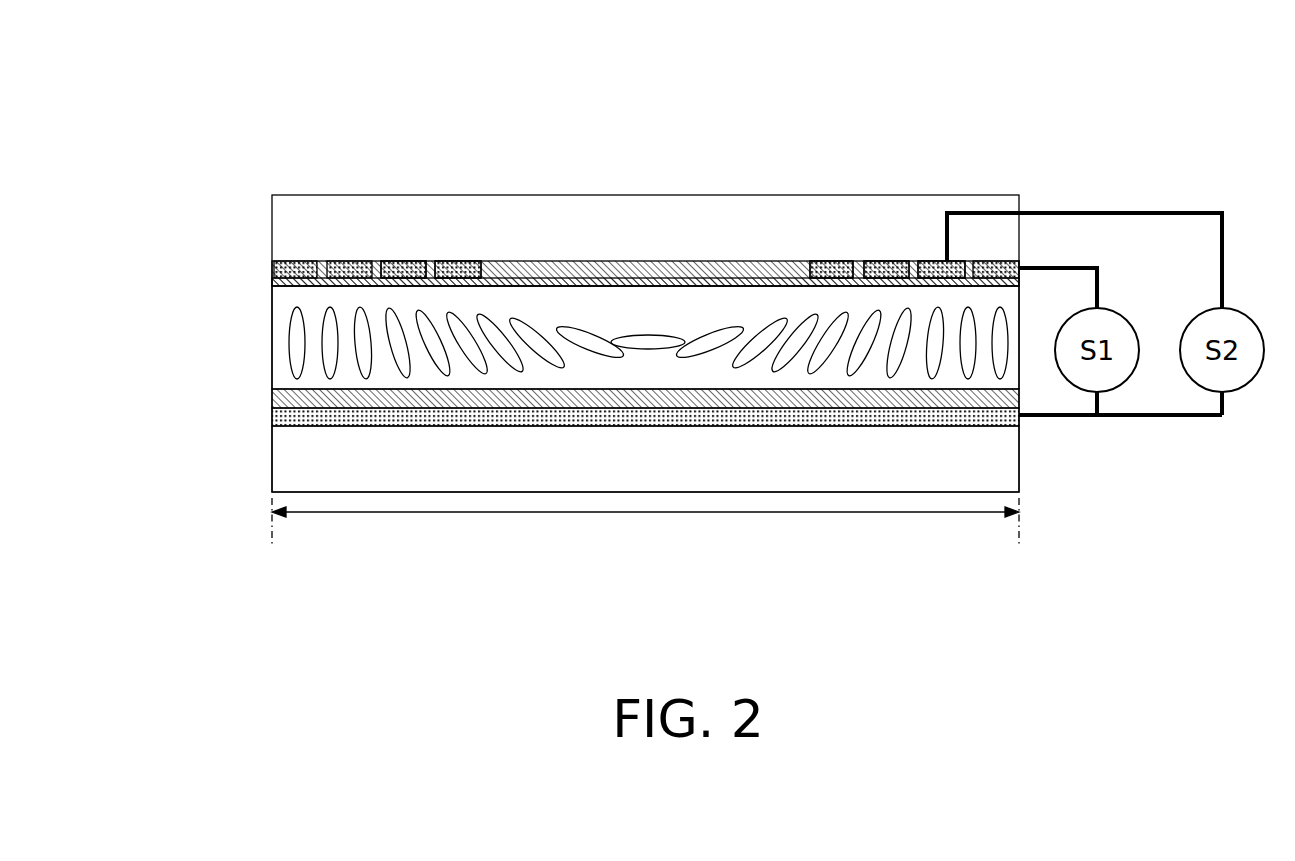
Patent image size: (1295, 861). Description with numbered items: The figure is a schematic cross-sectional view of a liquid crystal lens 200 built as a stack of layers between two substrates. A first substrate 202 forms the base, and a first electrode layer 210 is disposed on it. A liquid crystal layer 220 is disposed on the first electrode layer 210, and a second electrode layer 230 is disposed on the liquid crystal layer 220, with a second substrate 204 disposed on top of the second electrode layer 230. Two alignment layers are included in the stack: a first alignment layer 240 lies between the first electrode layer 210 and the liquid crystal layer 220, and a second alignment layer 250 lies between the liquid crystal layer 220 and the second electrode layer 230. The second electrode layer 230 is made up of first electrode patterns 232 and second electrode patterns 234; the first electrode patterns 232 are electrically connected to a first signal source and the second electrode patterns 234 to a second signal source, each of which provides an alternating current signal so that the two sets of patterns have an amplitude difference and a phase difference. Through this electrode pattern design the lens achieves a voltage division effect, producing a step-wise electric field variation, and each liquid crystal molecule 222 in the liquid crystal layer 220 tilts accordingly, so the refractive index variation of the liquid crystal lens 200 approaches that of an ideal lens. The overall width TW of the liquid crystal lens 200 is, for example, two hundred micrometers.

The liquid crystal lens 200 is at (1150, 647).
The first substrate 202 is at (295, 480).
The second substrate 204 is at (295, 220).
The first electrode layer 210 is at (280, 418).
The liquid crystal layer 220 is at (283, 350).
The liquid crystal molecule 222 is at (360, 335).
The second electrode layer 230 is at (843, 81).
The first electrode patterns 232 is at (413, 272).
The second electrode patterns 234 is at (453, 262).
The first alignment layer 240 is at (277, 395).
The second alignment layer 250 is at (272, 282).
The width TW is at (548, 512).